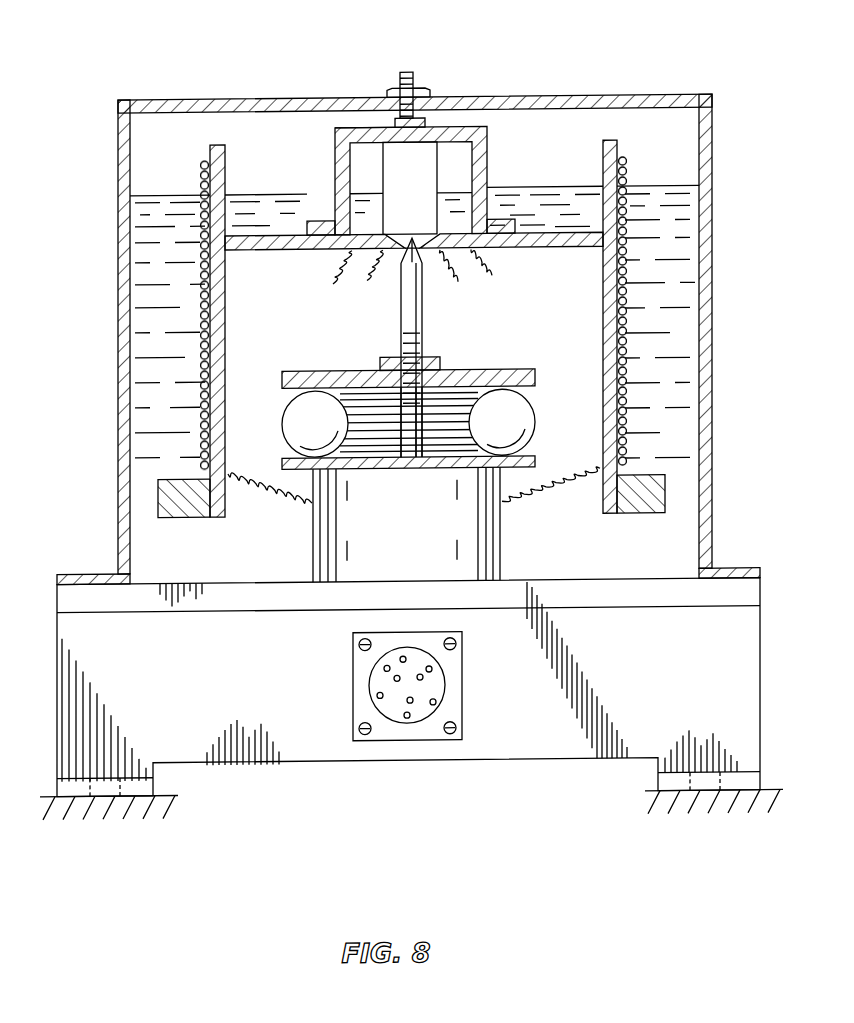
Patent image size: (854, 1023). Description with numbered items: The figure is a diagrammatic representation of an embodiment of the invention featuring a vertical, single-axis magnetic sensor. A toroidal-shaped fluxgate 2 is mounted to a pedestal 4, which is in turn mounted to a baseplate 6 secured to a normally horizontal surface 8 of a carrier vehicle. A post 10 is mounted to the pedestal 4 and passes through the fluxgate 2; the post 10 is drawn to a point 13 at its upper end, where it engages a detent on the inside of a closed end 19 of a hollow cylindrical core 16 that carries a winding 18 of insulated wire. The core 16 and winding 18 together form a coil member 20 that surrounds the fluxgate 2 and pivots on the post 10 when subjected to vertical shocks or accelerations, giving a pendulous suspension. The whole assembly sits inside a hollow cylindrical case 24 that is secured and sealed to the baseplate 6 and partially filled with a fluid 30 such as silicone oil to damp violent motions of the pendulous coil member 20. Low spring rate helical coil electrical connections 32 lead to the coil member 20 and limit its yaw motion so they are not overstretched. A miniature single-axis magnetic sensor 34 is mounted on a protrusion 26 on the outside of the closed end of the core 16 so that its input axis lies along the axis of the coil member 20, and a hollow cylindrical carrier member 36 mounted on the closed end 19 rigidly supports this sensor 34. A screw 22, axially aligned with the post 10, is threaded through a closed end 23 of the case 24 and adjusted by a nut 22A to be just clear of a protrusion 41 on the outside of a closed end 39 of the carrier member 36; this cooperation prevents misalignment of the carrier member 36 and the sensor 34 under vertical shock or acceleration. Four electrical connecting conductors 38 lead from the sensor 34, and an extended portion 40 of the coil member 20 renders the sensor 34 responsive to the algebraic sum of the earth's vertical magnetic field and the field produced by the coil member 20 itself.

The fluxgate 2 is at (537, 424).
The pedestal 4 is at (505, 552).
The baseplate 6 is at (760, 685).
The horizontal surface 8 is at (100, 812).
The post 10 is at (423, 330).
The point 13 is at (421, 262).
The hollow cylindrical core 16 is at (612, 142).
The winding 18 is at (623, 372).
The closed end 19 is at (555, 234).
The coil member 20 is at (183, 320).
The screw 22 is at (401, 72).
The nut 22A is at (425, 88).
The closed end 23 is at (585, 97).
The hollow cylindrical case 24 is at (712, 158).
The protrusion 26 is at (405, 232).
The fluid 30 is at (558, 188).
The helical coil electrical connections 32 is at (300, 502).
The single-axis magnetic sensor 34 is at (440, 175).
The carrier member 36 is at (331, 174).
The electrical connecting conductors 38 is at (333, 285).
The closed end 39 is at (366, 127).
The extended portion 40 is at (225, 170).
The protrusion 41 is at (428, 120).